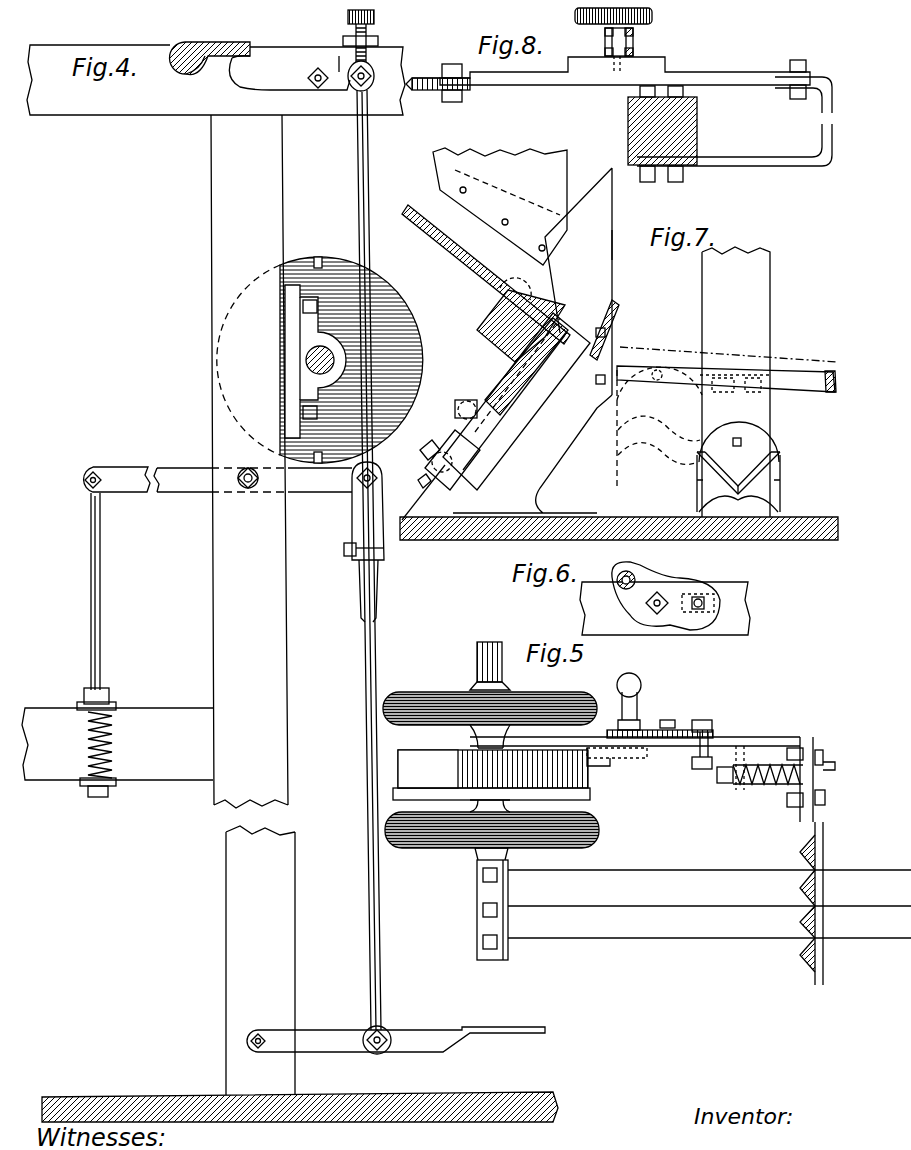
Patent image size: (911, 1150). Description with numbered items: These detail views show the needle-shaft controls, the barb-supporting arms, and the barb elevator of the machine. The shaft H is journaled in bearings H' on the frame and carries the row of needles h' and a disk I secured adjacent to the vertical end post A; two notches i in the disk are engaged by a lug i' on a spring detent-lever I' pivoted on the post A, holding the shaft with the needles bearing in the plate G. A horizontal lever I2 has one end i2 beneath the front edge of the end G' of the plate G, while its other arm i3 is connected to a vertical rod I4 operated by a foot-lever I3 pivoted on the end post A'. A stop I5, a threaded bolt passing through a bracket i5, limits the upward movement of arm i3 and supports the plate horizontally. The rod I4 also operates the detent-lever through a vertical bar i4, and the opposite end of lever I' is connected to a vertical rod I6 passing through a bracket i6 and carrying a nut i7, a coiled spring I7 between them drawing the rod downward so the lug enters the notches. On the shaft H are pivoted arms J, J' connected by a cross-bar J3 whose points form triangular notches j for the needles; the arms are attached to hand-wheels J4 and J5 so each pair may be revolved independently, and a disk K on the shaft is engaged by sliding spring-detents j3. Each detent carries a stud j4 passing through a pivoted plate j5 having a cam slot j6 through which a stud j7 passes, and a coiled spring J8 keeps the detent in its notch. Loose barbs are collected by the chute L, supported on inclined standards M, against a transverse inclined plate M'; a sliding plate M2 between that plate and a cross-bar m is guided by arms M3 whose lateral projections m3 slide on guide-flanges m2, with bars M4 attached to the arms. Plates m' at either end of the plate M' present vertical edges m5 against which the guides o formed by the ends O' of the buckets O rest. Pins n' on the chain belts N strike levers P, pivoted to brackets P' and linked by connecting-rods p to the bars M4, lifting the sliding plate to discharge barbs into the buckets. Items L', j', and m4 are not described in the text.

In FIG. 4, the vertical end post A is at (253, 605).
In FIG. 8, the vertical end post A is at (646, 134).
In FIG. 7, the vertical end post A is at (736, 382).
In FIG. 4, the vertical end post A' is at (216, 80).
In FIG. 4, the transverse metal plate G is at (195, 82).
In FIG. 4, the end of the plate G' is at (210, 46).
In FIG. 4, the shaft H is at (290, 357).
In FIG. 5, the shaft H is at (500, 798).
In FIG. 4, the bearings H' is at (298, 348).
In FIG. 4, the disk I is at (320, 360).
In FIG. 4, the spring detent-lever I' is at (218, 479).
In FIG. 4, the horizontal lever I2 is at (289, 74).
In FIG. 4, the foot-lever I3 is at (446, 1016).
In FIG. 4, the vertical rod I4 is at (371, 545).
In FIG. 4, the stop I5 is at (368, 50).
In FIG. 4, the vertical rod I6 is at (100, 615).
In FIG. 4, the coiled spring I7 is at (112, 746).
In FIG. 4, the notches i is at (316, 251).
In FIG. 4, the lug i' is at (319, 470).
In FIG. 4, the end of the lever i2 is at (241, 66).
In FIG. 4, the arm of the lever i3 is at (334, 56).
In FIG. 4, the vertical bar i4 is at (352, 516).
In FIG. 4, the bracket i5 is at (348, 16).
In FIG. 4, the bracket i6 is at (116, 703).
In FIG. 4, the nut i7 is at (110, 791).
In FIG. 5, the arm J is at (491, 801).
In FIG. 6, the arm J' is at (665, 608).
In FIG. 5, the arm J' is at (641, 768).
In FIG. 5, the cross-bar J3 is at (806, 910).
In FIG. 5, the hand-wheel J4 is at (492, 839).
In FIG. 5, the hand-wheel J5 is at (446, 700).
In FIG. 5, the coiled spring J8 is at (760, 786).
In FIG. 5, the triangular notches j is at (794, 894).
In FIG. 5, the end tooth j' is at (794, 900).
In FIG. 5, the spring-detents j3 is at (597, 766).
In FIG. 6, the stud j4 is at (698, 612).
In FIG. 5, the stud j4 is at (700, 762).
In FIG. 6, the plate j5 is at (660, 598).
In FIG. 5, the plate j5 is at (645, 728).
In FIG. 6, the cam slot j6 is at (665, 574).
In FIG. 6, the stud j7 is at (655, 615).
In FIG. 5, the stud j7 is at (672, 720).
In FIG. 5, the disk K is at (493, 769).
In FIG. 7, the inclined trough or chute L is at (486, 274).
In FIG. 7, the plate L' is at (500, 206).
In FIG. 7, the inclined standards M is at (516, 401).
In FIG. 7, the transverse inclined plate M' is at (599, 342).
In FIG. 7, the sliding plate M2 is at (513, 372).
In FIG. 7, the downwardly-projecting arms M3 is at (550, 460).
In FIG. 7, the bars M4 is at (422, 492).
In FIG. 7, the cross-bar m is at (513, 320).
In FIG. 7, the plates m' is at (578, 281).
In FIG. 7, the guide-flanges m2 is at (522, 400).
In FIG. 7, the lateral projections m3 is at (452, 460).
In FIG. 7, the nut m4 is at (426, 462).
In FIG. 7, the vertical edges m5 is at (614, 248).
In FIG. 8, the chain belts N is at (650, 19).
In FIG. 8, the pins n' is at (609, 50).
In FIG. 7, the pins n' is at (690, 415).
In FIG. 7, the buckets O is at (754, 483).
In FIG. 7, the ends of the buckets O' is at (738, 458).
In FIG. 7, the guides o is at (648, 482).
In FIG. 8, the levers P is at (608, 79).
In FIG. 7, the levers P is at (750, 357).
In FIG. 8, the brackets P' is at (707, 111).
In FIG. 7, the brackets P' is at (727, 418).
In FIG. 8, the connecting-rods p is at (440, 95).
In FIG. 7, the connecting-rods p is at (448, 442).
In FIG. 5, the needles h' is at (709, 893).